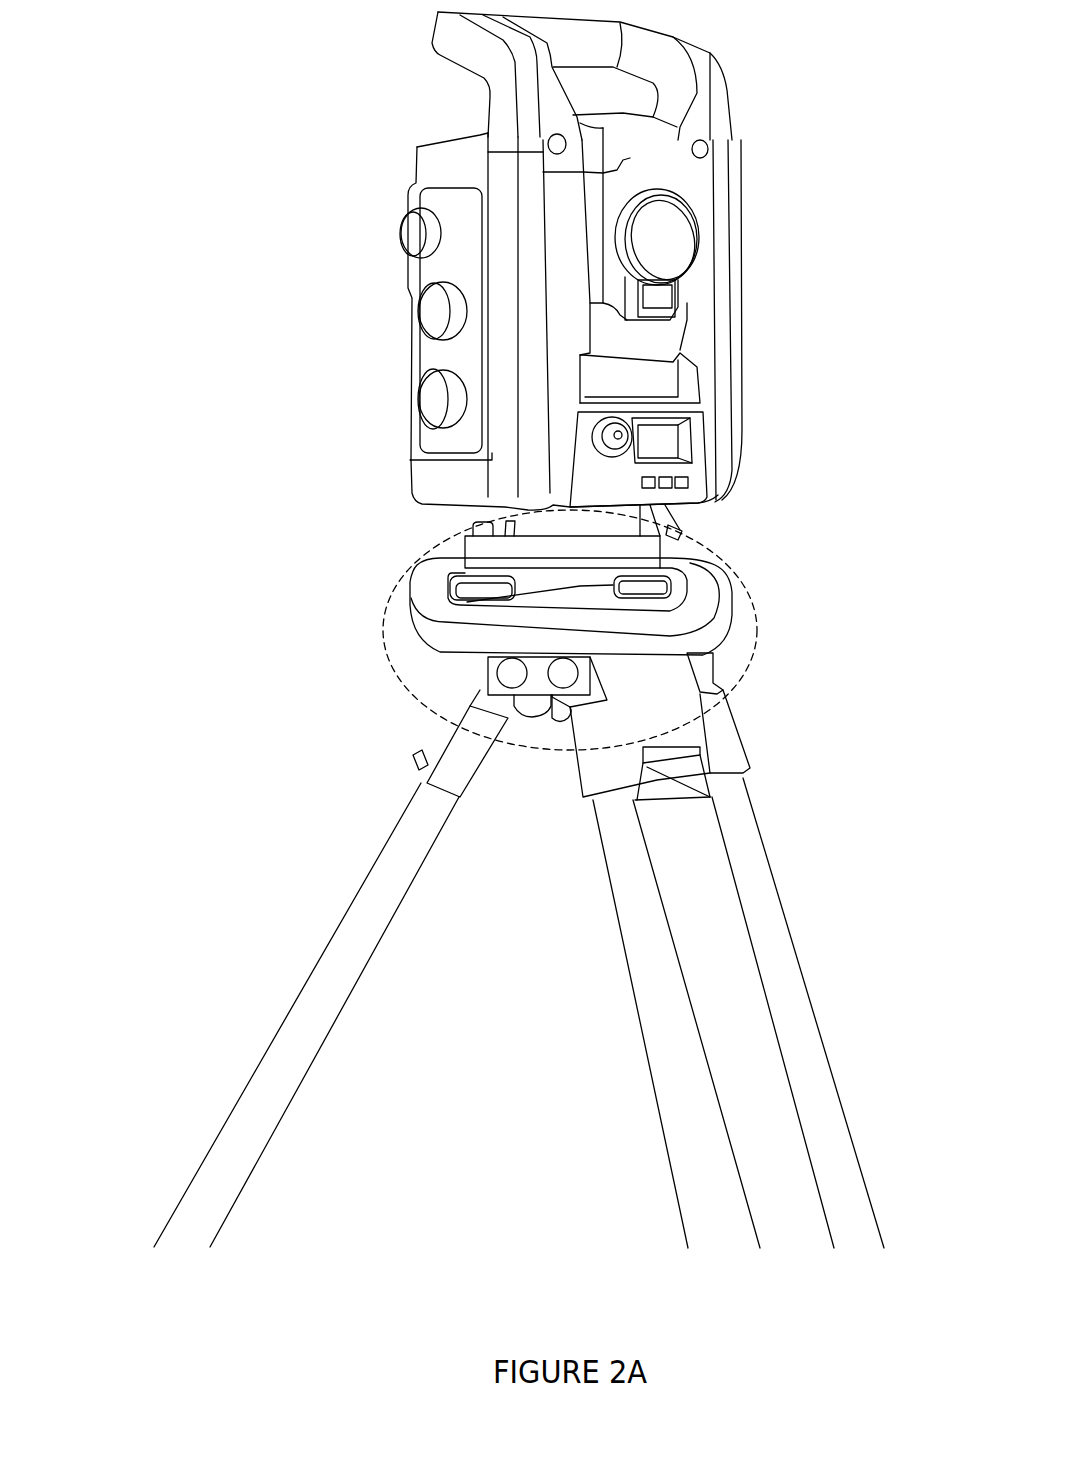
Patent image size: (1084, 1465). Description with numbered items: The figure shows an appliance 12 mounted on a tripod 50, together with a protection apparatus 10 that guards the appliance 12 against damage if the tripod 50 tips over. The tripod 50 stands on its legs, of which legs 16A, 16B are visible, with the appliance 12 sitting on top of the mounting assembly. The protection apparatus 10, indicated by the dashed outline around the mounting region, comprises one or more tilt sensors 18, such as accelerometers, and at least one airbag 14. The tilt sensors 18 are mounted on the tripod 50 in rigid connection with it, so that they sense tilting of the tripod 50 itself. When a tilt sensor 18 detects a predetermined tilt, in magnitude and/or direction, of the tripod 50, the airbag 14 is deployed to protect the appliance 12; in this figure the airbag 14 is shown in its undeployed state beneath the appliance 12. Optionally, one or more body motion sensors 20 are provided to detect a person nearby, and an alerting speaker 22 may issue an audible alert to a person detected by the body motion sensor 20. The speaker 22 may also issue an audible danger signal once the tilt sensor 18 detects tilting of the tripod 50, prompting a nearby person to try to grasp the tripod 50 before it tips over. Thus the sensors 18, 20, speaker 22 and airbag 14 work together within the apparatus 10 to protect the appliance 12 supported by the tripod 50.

The protection apparatus 10 is at (755, 632).
The protected appliance 12 is at (342, 189).
The airbag 14 is at (423, 592).
The leg of tripod 16A is at (377, 863).
The leg of tripod 16B is at (632, 1000).
The tilt sensor 18 is at (507, 672).
The body motion sensor 20 is at (563, 677).
The alerting speaker 22 is at (525, 702).
The tripod 50 is at (186, 862).